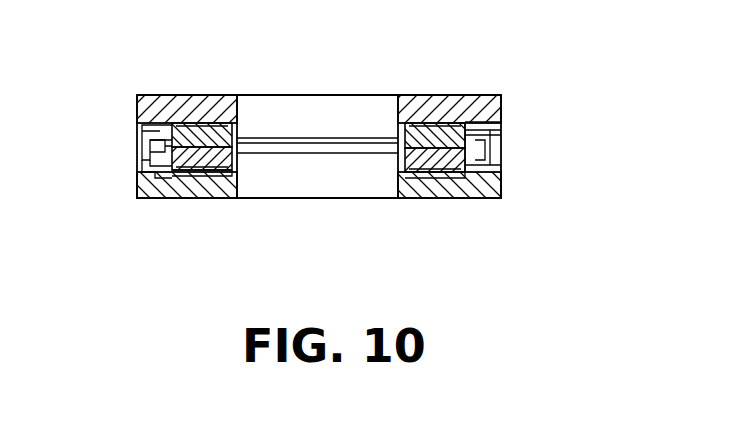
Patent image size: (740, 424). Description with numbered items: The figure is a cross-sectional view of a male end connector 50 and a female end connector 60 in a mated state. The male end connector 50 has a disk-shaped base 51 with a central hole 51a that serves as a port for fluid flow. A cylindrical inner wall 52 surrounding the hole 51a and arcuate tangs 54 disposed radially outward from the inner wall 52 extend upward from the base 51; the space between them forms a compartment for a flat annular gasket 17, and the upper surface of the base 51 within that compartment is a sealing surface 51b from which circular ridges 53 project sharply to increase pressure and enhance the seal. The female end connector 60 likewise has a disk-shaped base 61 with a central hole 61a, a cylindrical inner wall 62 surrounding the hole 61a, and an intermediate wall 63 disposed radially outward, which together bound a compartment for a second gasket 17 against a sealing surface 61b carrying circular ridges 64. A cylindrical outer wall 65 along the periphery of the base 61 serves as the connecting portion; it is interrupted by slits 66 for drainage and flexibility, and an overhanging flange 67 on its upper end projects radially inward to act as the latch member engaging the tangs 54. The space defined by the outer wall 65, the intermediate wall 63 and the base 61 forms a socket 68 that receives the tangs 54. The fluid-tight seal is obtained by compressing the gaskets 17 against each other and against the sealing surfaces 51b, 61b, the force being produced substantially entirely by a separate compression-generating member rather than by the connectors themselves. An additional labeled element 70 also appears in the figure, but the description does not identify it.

The gasket 17 is at (502, 130).
The male end connector 50 is at (513, 192).
The base 51 is at (482, 199).
The hole 51a is at (372, 183).
The sealing surface 51b is at (200, 178).
The inner wall 52 is at (240, 157).
The circular ridges 53 is at (445, 175).
The arcuate tangs 54 is at (178, 172).
The female end connector 60 is at (507, 82).
The base 61 is at (418, 95).
The hole 61a is at (305, 101).
The sealing surface 61b is at (435, 102).
The inner wall 62 is at (393, 103).
The intermediate wall 63 is at (472, 95).
The circular ridges 64 is at (232, 123).
The outer wall 65 is at (137, 142).
The slits 66 is at (503, 148).
The flange 67 is at (140, 170).
The socket 68 is at (148, 94).
The passage 70 is at (143, 147).